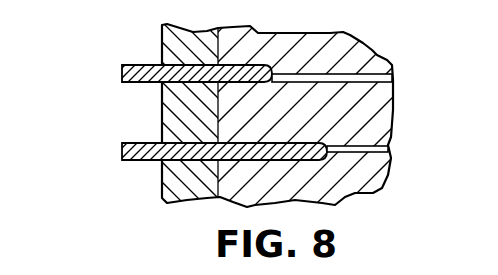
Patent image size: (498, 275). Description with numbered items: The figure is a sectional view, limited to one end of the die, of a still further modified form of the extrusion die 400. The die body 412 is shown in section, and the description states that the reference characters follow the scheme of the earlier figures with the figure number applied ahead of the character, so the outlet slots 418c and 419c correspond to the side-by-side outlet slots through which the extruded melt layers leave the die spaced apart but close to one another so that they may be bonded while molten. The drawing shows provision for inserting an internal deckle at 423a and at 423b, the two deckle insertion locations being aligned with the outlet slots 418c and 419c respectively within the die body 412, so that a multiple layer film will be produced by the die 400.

The connector assembly 400 is at (249, 109).
The body block 412 is at (378, 122).
The upper bore 418c is at (392, 78).
The lower bore 419c is at (393, 149).
The internal deckle 423a is at (122, 70).
The internal deckle 423b is at (122, 150).